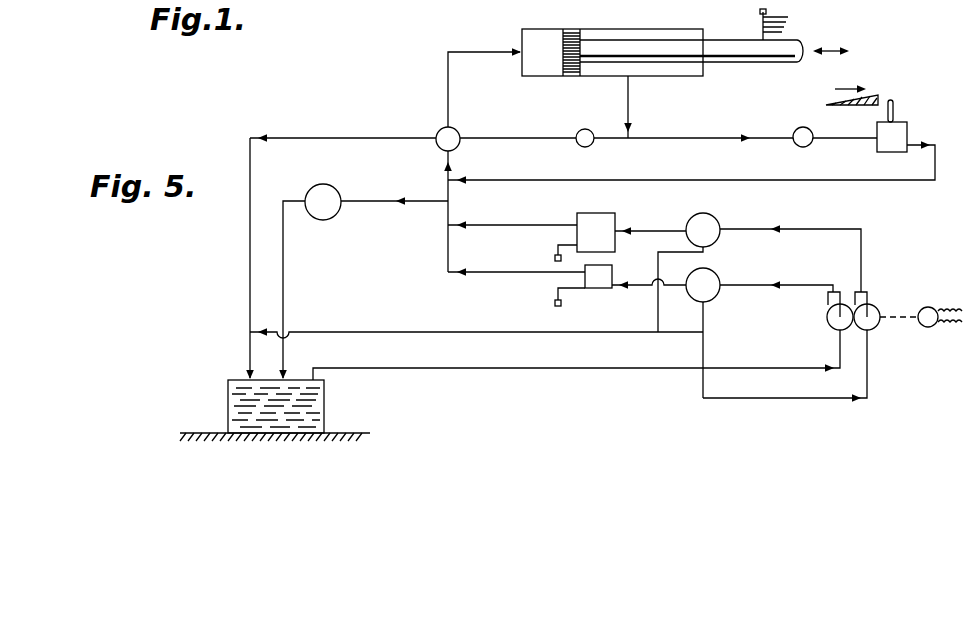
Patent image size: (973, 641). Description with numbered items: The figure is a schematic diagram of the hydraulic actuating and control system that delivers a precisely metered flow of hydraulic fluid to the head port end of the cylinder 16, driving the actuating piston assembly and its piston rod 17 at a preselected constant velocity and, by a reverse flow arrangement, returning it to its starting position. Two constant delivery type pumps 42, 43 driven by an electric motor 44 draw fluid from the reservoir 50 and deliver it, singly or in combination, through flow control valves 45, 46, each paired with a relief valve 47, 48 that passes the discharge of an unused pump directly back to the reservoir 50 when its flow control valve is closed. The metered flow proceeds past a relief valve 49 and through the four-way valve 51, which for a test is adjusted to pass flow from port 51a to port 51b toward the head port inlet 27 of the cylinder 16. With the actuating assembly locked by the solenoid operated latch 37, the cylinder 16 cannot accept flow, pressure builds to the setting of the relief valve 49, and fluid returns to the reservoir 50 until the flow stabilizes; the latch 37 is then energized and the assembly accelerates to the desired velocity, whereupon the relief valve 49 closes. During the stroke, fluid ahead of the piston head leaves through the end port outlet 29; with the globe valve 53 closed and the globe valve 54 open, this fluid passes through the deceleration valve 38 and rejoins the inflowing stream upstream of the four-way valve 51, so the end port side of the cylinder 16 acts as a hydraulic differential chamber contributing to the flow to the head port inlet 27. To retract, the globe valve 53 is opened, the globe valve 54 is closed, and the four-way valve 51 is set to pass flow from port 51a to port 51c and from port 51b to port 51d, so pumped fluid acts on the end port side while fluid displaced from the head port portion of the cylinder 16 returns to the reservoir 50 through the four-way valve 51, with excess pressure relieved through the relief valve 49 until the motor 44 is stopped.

The cylinder 16 is at (672, 36).
The piston rod 17 is at (738, 50).
The head port inlet 27 is at (517, 50).
The end port outlet 29 is at (628, 77).
The solenoid operated latch 37 is at (760, 12).
The deceleration valve 38 is at (906, 128).
The pump 42 is at (828, 318).
The pump 43 is at (864, 305).
The electric motor 44 is at (930, 306).
The flow control valve 45 is at (605, 218).
The flow control valve 46 is at (598, 288).
The relief valve 47 is at (716, 290).
The relief valve 48 is at (716, 223).
The relief valve 49 is at (338, 210).
The reservoir 50 is at (315, 415).
The four-way valve 51 is at (459, 131).
The port 51a is at (456, 149).
The port 51b is at (440, 128).
The port 51c is at (460, 136).
The port 51d is at (437, 143).
The globe valve 53 is at (586, 128).
The globe valve 54 is at (803, 126).